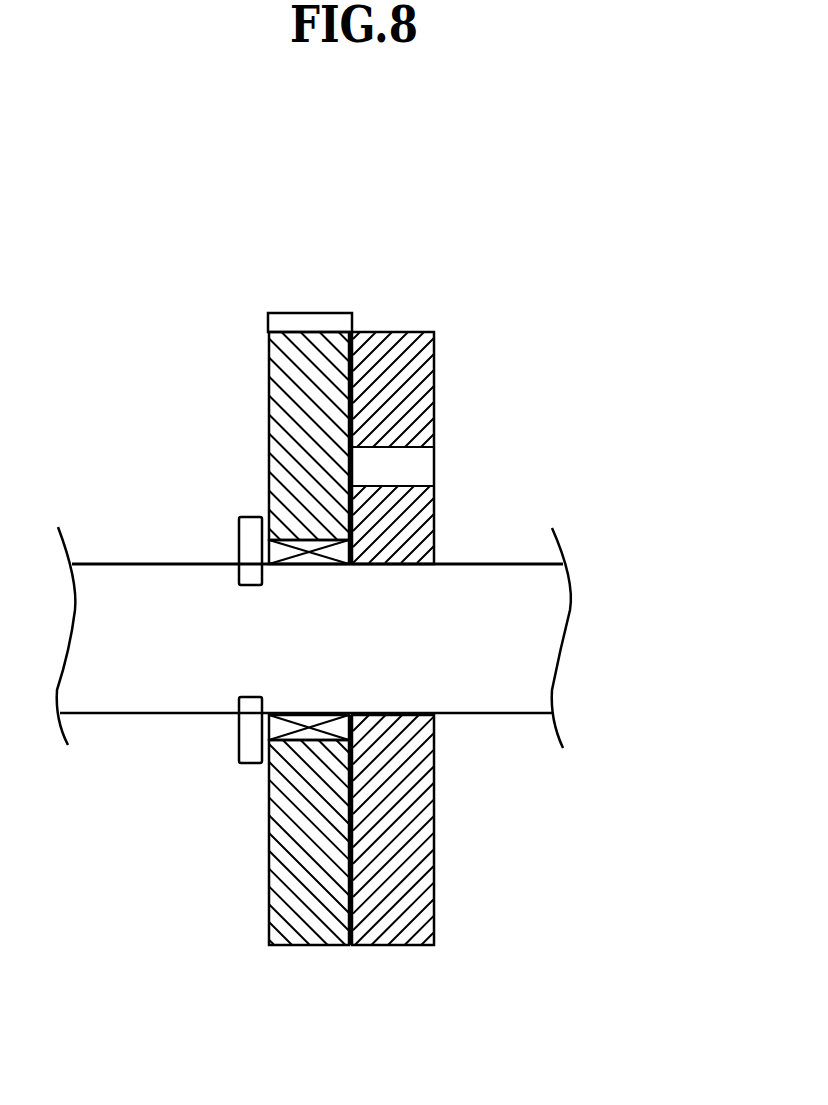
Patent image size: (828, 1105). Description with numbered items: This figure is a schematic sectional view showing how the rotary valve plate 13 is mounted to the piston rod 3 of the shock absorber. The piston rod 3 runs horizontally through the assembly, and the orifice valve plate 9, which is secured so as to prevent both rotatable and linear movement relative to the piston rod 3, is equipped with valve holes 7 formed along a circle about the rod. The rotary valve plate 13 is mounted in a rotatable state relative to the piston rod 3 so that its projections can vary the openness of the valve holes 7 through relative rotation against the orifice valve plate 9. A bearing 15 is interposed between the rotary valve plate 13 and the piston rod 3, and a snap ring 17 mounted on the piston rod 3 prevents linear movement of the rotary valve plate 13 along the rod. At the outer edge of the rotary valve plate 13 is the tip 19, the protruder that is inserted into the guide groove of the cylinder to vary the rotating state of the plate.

The piston rod 3 is at (530, 641).
The valve holes 7 is at (393, 450).
The orifice valve plate 9 is at (427, 857).
The rotary valve plate 13 is at (290, 410).
The bearing 15 is at (309, 547).
The snap ring 17 is at (252, 743).
The tip 19 is at (317, 320).